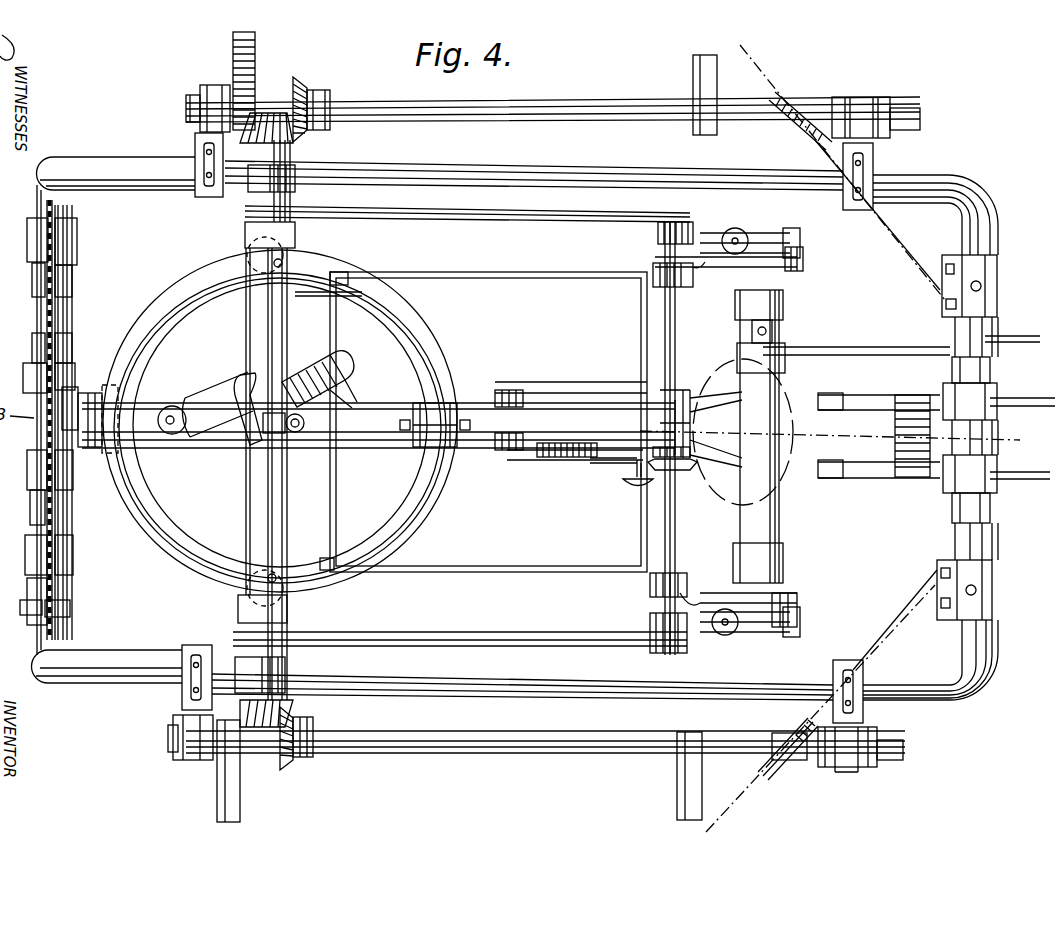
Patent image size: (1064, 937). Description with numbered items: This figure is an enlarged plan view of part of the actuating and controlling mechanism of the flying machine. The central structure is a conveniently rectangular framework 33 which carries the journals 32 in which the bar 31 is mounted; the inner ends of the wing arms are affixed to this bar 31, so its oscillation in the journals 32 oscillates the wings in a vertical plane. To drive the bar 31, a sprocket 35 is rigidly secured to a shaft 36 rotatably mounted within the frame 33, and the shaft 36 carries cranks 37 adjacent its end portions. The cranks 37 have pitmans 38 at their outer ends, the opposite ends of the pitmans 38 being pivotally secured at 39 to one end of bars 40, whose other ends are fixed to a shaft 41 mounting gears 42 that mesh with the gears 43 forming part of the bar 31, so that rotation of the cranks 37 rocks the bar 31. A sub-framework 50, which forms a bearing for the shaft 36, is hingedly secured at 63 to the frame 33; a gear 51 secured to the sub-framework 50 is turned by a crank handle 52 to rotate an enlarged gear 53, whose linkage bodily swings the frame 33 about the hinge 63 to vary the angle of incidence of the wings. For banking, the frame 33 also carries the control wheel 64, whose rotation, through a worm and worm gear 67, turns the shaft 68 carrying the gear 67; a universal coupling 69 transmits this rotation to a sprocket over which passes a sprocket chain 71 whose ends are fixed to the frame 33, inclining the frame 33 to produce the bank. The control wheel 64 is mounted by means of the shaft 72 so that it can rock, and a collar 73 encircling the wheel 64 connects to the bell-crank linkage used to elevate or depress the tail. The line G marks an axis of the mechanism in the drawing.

The bar 31 is at (578, 110).
The journals 32 is at (186, 102).
The framework 33 is at (975, 218).
The sprocket 35 is at (665, 475).
The shaft 36 is at (673, 533).
The cranks 37 is at (775, 265).
The pitmans 38 is at (765, 236).
The pivot 39 is at (685, 220).
The bars 40 is at (548, 216).
The shaft 41 is at (282, 204).
The gears 42 is at (258, 128).
The gears 43 is at (308, 86).
The sub-framework 50 is at (488, 278).
The gear 51 is at (574, 460).
The crank handle 52 is at (636, 486).
The enlarged gear 53 is at (532, 450).
The hinge 63 is at (982, 470).
The control wheel 64 is at (410, 515).
The worm gear 67 is at (250, 358).
The shaft 68 is at (235, 432).
The universal coupling 69 is at (171, 430).
The sprocket chain 71 is at (50, 318).
The shaft 72 is at (284, 498).
The collar 73 is at (450, 450).
The axis line G is at (840, 436).